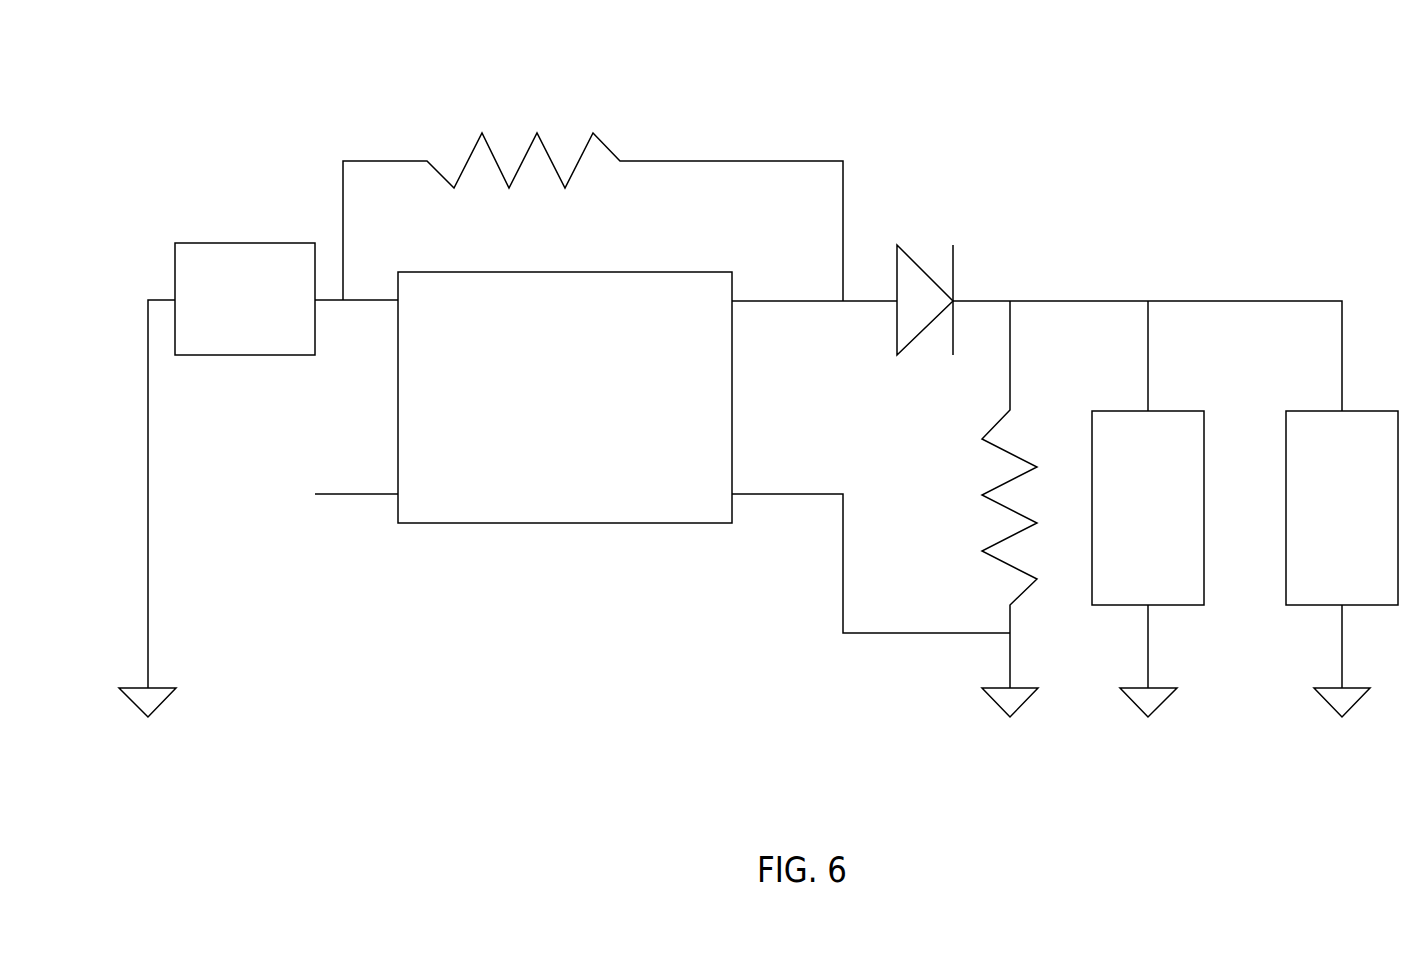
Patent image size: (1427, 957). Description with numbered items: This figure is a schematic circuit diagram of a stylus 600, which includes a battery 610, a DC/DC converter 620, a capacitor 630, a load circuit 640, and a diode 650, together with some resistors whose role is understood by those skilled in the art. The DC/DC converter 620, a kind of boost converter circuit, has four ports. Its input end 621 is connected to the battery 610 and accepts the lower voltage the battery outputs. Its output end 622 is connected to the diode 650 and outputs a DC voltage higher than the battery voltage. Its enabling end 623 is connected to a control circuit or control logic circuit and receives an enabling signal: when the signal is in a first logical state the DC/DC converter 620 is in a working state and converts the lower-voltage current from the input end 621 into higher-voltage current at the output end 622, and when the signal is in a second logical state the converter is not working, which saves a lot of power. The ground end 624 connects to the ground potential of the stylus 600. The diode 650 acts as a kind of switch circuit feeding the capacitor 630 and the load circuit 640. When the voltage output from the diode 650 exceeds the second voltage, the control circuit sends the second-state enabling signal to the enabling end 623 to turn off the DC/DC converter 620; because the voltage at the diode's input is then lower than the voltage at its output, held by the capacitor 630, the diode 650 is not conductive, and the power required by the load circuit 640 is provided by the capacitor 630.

The stylus 600 is at (1279, 92).
The battery 610 is at (263, 297).
The DC/DC converter 620 is at (583, 395).
The input end 621 is at (513, 311).
The output end 622 is at (713, 311).
The enabling end 623 is at (503, 506).
The ground end 624 is at (708, 506).
The capacitor 630 is at (1167, 506).
The load circuit 640 is at (1362, 491).
The diode 650 is at (953, 262).